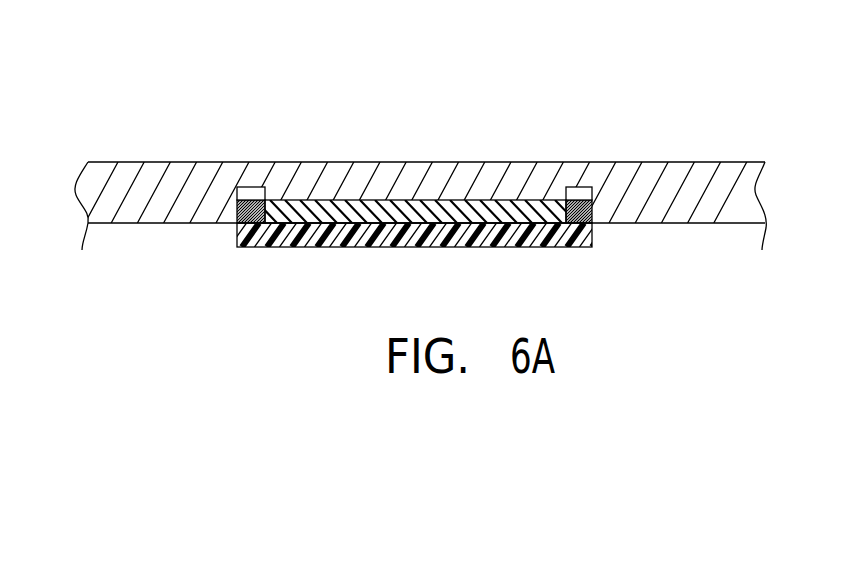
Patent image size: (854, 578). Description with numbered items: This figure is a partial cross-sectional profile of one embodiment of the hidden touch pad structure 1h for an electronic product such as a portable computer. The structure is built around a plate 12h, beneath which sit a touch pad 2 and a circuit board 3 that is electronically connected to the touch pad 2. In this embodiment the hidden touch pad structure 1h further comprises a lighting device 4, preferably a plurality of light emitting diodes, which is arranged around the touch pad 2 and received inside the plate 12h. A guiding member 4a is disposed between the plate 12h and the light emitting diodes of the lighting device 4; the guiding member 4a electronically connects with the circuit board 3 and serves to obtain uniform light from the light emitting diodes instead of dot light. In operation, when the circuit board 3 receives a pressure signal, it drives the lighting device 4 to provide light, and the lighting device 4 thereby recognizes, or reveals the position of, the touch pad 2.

The hidden touch pad structure 1h is at (141, 75).
The plate 12h is at (186, 162).
The lighting device 4 is at (236, 224).
The guiding member 4a is at (253, 193).
The touch pad 2 is at (485, 213).
The circuit board 3 is at (338, 247).